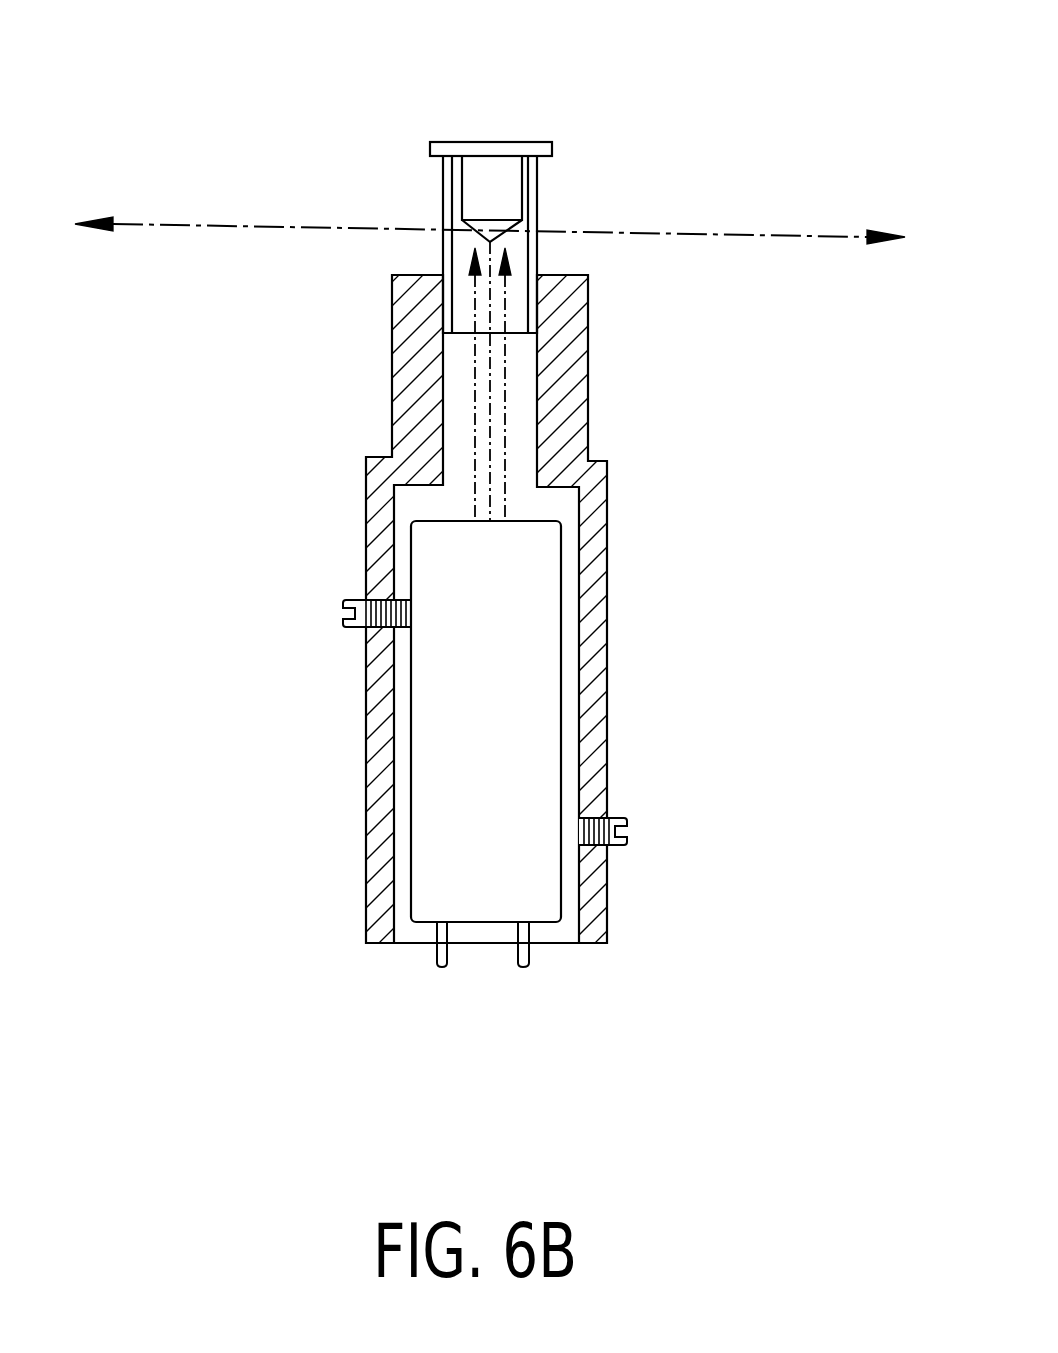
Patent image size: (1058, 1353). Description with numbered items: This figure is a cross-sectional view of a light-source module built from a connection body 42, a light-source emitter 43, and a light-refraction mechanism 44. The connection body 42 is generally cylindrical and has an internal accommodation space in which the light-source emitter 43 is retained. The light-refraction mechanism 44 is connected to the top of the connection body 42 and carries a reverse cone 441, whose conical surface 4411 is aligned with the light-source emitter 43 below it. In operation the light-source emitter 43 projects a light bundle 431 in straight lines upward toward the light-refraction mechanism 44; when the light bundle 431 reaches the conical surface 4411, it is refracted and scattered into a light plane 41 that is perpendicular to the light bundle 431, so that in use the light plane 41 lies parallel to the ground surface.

The light plane 41 is at (838, 237).
The connection body 42 is at (595, 522).
The light-source emitter 43 is at (537, 692).
The light bundle 431 is at (507, 407).
The light-refraction mechanism 44 is at (611, 166).
The reverse cone 441 is at (497, 172).
The conical surface 4411 is at (590, 198).